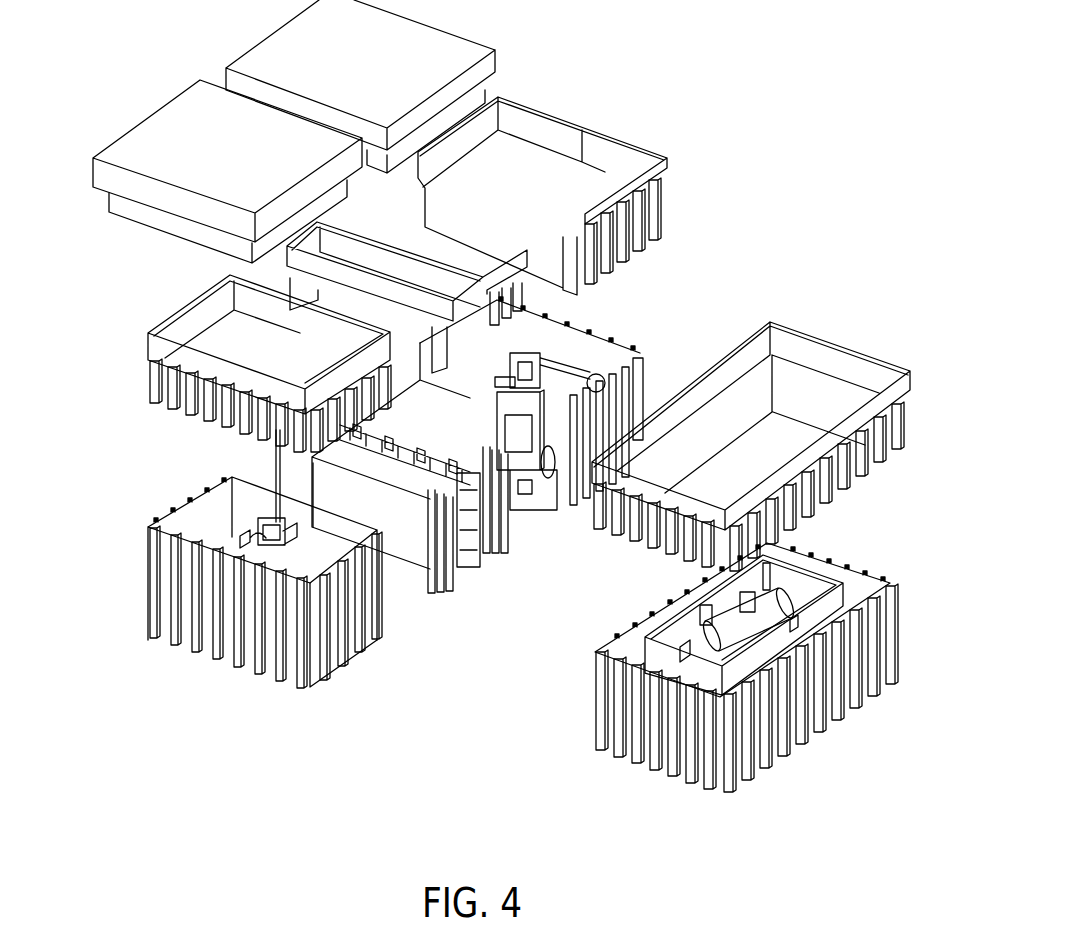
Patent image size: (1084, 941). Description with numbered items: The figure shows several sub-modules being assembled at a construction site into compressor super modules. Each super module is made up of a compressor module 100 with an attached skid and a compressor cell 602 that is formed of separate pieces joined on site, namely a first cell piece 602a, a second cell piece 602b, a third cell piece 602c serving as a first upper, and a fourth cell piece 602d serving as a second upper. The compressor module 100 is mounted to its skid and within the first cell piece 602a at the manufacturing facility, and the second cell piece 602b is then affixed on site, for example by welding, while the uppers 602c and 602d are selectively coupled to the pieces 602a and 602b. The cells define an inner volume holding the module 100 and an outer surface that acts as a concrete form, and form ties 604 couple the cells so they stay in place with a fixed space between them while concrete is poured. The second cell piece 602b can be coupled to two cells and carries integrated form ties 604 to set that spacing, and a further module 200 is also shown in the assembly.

The compressor module 100 is at (565, 355).
The pump assembly 200 is at (777, 598).
The compressor cell 602 is at (238, 673).
The first cell piece 602a is at (330, 670).
The second cell piece 602b is at (412, 583).
The third cell piece (first upper) 602c is at (148, 340).
The fourth cell piece (second upper) 602d is at (340, 288).
The form ties 604 is at (477, 560).